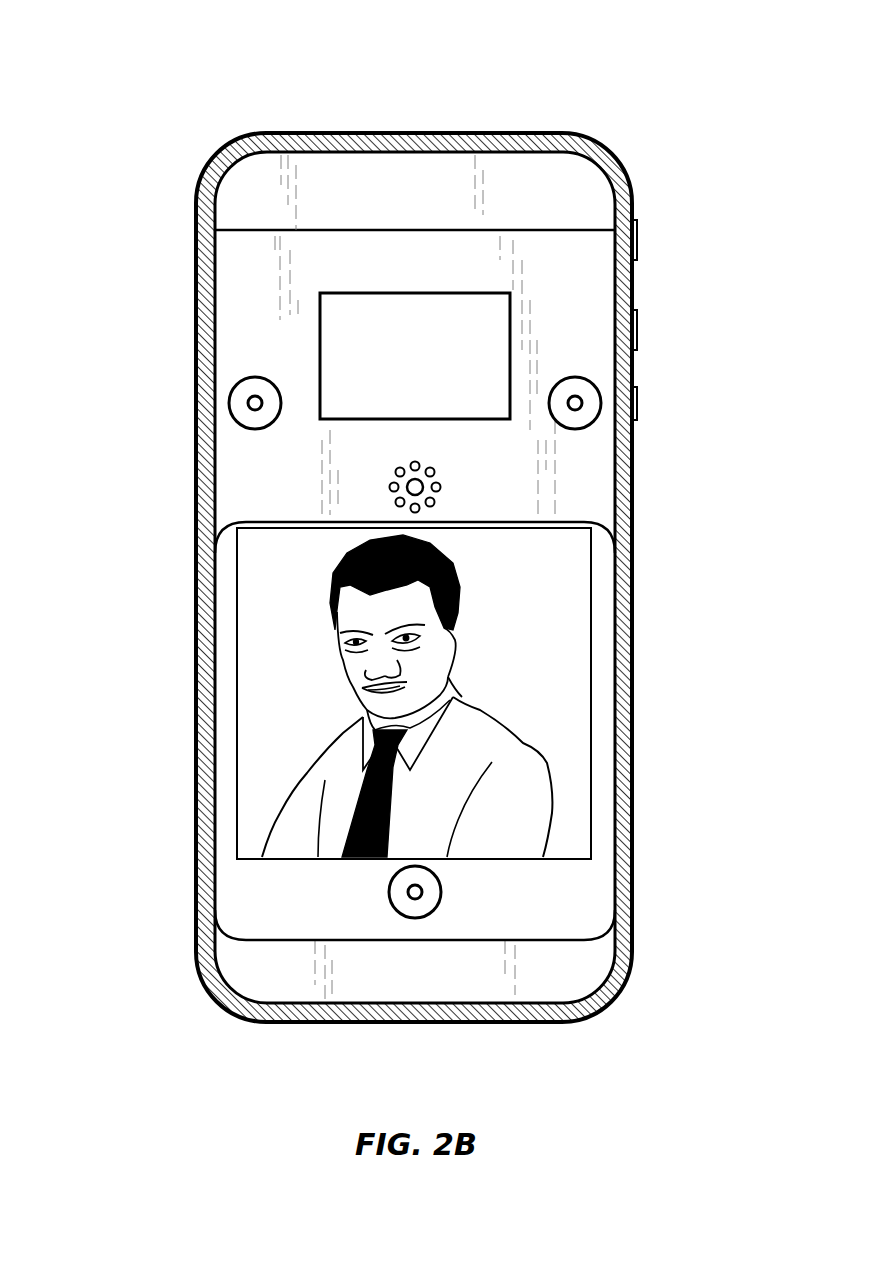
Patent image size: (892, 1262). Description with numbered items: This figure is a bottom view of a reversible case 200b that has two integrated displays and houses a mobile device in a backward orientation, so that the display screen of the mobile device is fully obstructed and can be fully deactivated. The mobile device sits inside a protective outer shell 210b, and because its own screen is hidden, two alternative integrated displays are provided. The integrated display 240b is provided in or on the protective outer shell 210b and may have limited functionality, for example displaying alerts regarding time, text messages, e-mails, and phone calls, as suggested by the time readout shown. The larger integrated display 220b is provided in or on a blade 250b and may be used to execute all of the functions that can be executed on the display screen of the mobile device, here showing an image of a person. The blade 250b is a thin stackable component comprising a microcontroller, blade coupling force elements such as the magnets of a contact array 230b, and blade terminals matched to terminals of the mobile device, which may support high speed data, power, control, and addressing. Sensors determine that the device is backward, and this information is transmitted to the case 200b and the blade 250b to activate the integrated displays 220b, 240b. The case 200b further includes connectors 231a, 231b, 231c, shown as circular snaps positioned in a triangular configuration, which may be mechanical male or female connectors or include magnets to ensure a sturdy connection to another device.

The reversible case 200b is at (675, 68).
The protective outer shell 210b is at (633, 945).
The integrated display 220b is at (560, 672).
The contact array 230b is at (362, 488).
The connector 231a is at (247, 403).
The connector 231b is at (583, 403).
The connector 231c is at (425, 895).
The integrated display 240b is at (510, 344).
The blade 250b is at (588, 897).